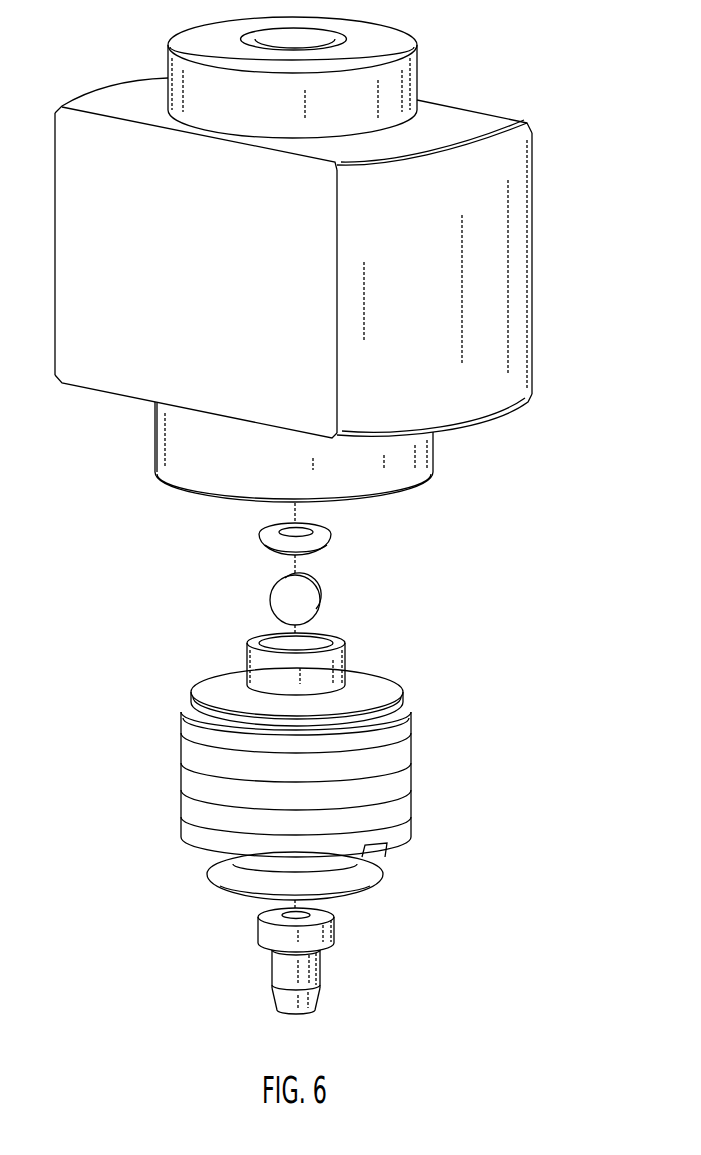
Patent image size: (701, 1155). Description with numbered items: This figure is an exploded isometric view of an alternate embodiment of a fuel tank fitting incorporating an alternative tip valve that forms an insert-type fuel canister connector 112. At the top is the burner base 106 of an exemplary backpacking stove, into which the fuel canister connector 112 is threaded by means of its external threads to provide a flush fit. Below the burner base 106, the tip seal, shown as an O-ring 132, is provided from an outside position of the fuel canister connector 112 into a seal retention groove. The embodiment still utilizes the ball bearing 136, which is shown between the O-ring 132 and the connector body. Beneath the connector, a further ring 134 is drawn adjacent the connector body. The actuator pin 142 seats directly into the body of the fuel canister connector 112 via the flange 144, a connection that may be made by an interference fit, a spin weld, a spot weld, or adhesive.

The burner base 106 is at (513, 267).
The O-ring 132 is at (317, 542).
The ball bearing 136 is at (303, 604).
The fuel canister connector 112 is at (383, 710).
The O-ring 134 is at (363, 875).
The flange 144 is at (273, 933).
The actuator pin 142 is at (303, 972).